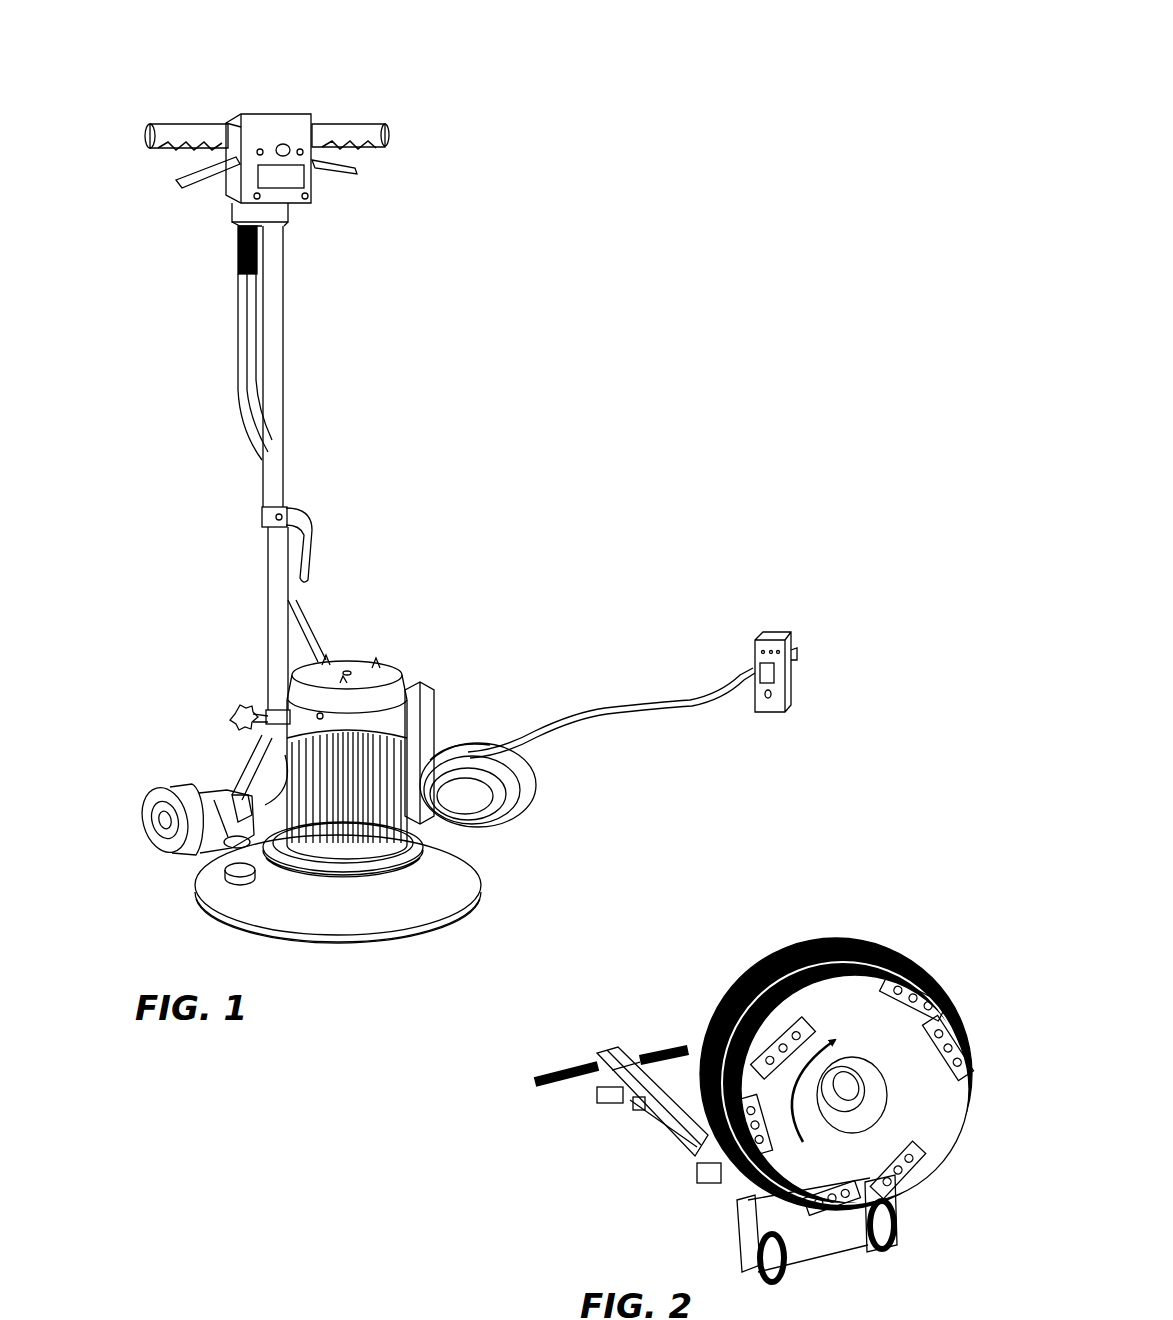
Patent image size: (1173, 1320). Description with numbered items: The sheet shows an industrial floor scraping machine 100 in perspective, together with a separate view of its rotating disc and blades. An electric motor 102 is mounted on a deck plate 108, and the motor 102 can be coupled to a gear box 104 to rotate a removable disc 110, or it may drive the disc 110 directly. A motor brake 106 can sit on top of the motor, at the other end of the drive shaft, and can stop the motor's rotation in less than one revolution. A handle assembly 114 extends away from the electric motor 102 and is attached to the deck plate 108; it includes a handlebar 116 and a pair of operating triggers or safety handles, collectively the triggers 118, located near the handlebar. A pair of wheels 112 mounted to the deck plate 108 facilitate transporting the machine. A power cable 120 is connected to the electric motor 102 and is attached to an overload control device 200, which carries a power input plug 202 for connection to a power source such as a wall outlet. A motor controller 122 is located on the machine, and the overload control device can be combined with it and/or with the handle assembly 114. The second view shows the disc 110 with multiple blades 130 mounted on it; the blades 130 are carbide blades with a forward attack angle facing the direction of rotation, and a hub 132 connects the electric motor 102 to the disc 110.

In FIG. 1, the floor scraping machine 100 is at (532, 416).
In FIG. 2, the floor scraping machine 100 is at (758, 872).
In FIG. 1, the electric motor 102 is at (391, 668).
In FIG. 1, the gear box 104 is at (435, 849).
In FIG. 1, the motor brake 106 is at (427, 850).
In FIG. 1, the deck plate 108 is at (450, 878).
In FIG. 1, the removable disc 110 is at (410, 945).
In FIG. 2, the removable disc 110 is at (850, 995).
In FIG. 1, the wheels 112 is at (165, 790).
In FIG. 1, the handle assembly 114 is at (280, 395).
In FIG. 1, the handlebar 116 is at (325, 120).
In FIG. 1, the triggers 118 is at (275, 199).
In FIG. 1, the power cable 120 is at (538, 727).
In FIG. 1, the motor controller 122 is at (425, 700).
In FIG. 2, the blades 130 is at (930, 985).
In FIG. 2, the hub 132 is at (868, 1097).
In FIG. 1, the overload control device 200 is at (786, 610).
In FIG. 1, the power input plug 202 is at (797, 650).